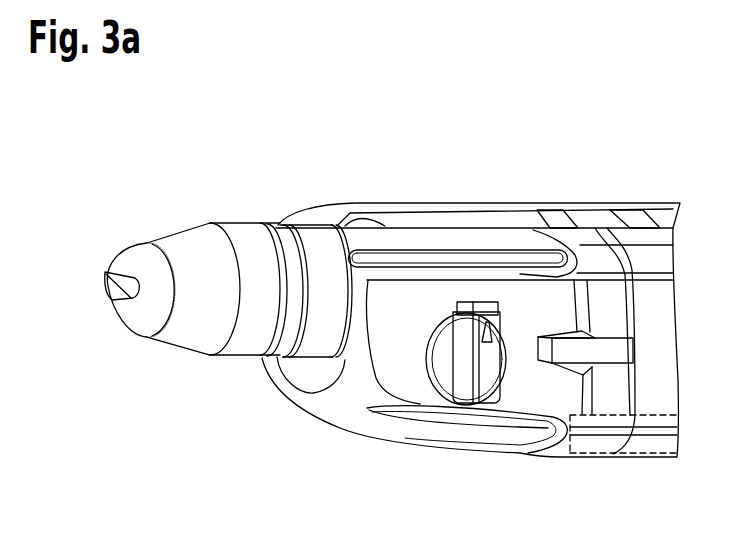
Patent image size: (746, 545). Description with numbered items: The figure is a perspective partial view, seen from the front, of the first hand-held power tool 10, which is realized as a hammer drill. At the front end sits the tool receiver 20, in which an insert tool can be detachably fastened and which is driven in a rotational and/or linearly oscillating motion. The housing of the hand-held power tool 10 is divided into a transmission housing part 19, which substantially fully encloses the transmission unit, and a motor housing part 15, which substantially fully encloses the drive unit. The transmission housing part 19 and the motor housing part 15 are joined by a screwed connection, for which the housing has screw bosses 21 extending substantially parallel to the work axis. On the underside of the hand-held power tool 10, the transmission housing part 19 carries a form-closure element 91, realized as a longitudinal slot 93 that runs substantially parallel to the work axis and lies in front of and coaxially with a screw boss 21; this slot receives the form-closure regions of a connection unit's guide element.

The hand-held power tool 10 is at (513, 160).
The tool receiver 20 is at (190, 206).
The transmission housing part 19 is at (423, 220).
The motor housing part 15 is at (632, 220).
The screw boss 21 is at (640, 455).
The form-closure element 91 is at (422, 418).
The longitudinal slot 93 is at (464, 428).